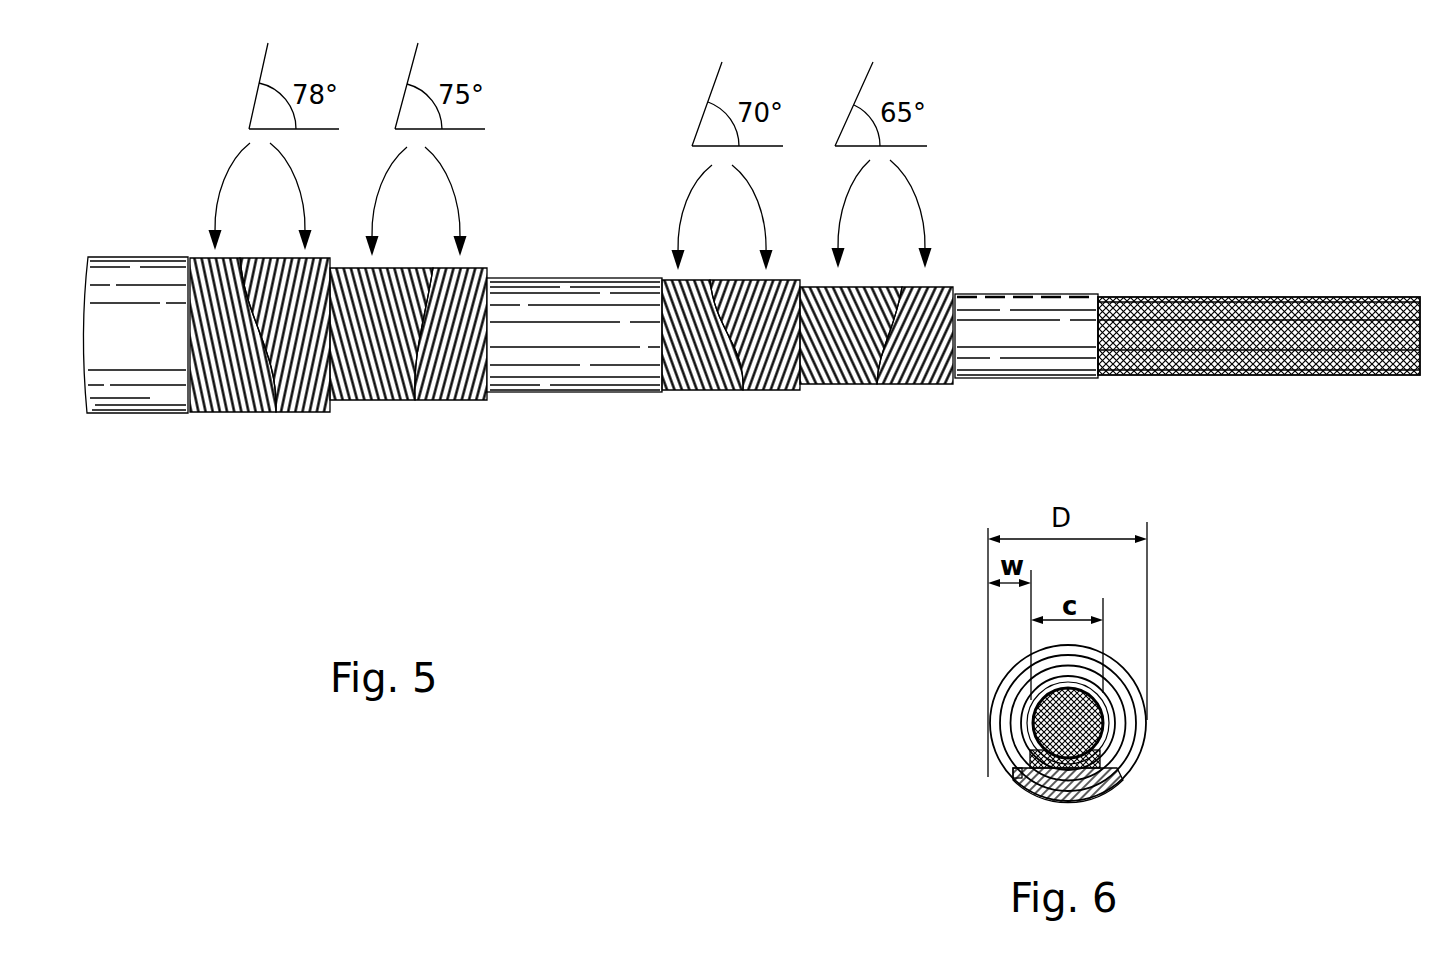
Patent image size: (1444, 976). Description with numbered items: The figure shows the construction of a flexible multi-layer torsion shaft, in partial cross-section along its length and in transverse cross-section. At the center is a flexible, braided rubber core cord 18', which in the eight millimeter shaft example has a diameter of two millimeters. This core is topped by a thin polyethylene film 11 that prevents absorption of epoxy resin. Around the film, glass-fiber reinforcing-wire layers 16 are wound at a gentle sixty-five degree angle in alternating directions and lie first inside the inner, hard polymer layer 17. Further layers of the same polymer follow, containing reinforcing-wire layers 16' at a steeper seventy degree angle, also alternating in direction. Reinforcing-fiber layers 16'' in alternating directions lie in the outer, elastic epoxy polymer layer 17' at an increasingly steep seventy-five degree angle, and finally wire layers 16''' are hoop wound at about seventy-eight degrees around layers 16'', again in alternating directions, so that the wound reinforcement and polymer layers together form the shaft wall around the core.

In FIG. 5, the polyethylene film 11 is at (1061, 330).
In FIG. 6, the polyethylene film 11 is at (1035, 748).
In FIG. 5, the reinforcing-wire layers 16 is at (876, 380).
In FIG. 6, the reinforcing-wire layers 16 is at (1010, 696).
In FIG. 5, the reinforcing-wire layers 16' is at (732, 377).
In FIG. 6, the reinforcing-wire layers 16' is at (1133, 680).
In FIG. 5, the reinforcing-fiber layers 16'' is at (408, 413).
In FIG. 6, the reinforcing-fiber layers 16'' is at (1152, 723).
In FIG. 5, the wire layers 16''' is at (260, 408).
In FIG. 6, the wire layers 16''' is at (1149, 734).
In FIG. 5, the inner hard polymer layer 17 is at (579, 406).
In FIG. 6, the inner hard polymer layer 17 is at (1119, 738).
In FIG. 5, the outer elastic polymer layer 17' is at (137, 430).
In FIG. 6, the outer elastic polymer layer 17' is at (999, 747).
In FIG. 5, the rubber core cord 18' is at (1259, 385).
In FIG. 6, the rubber core cord 18' is at (1009, 723).